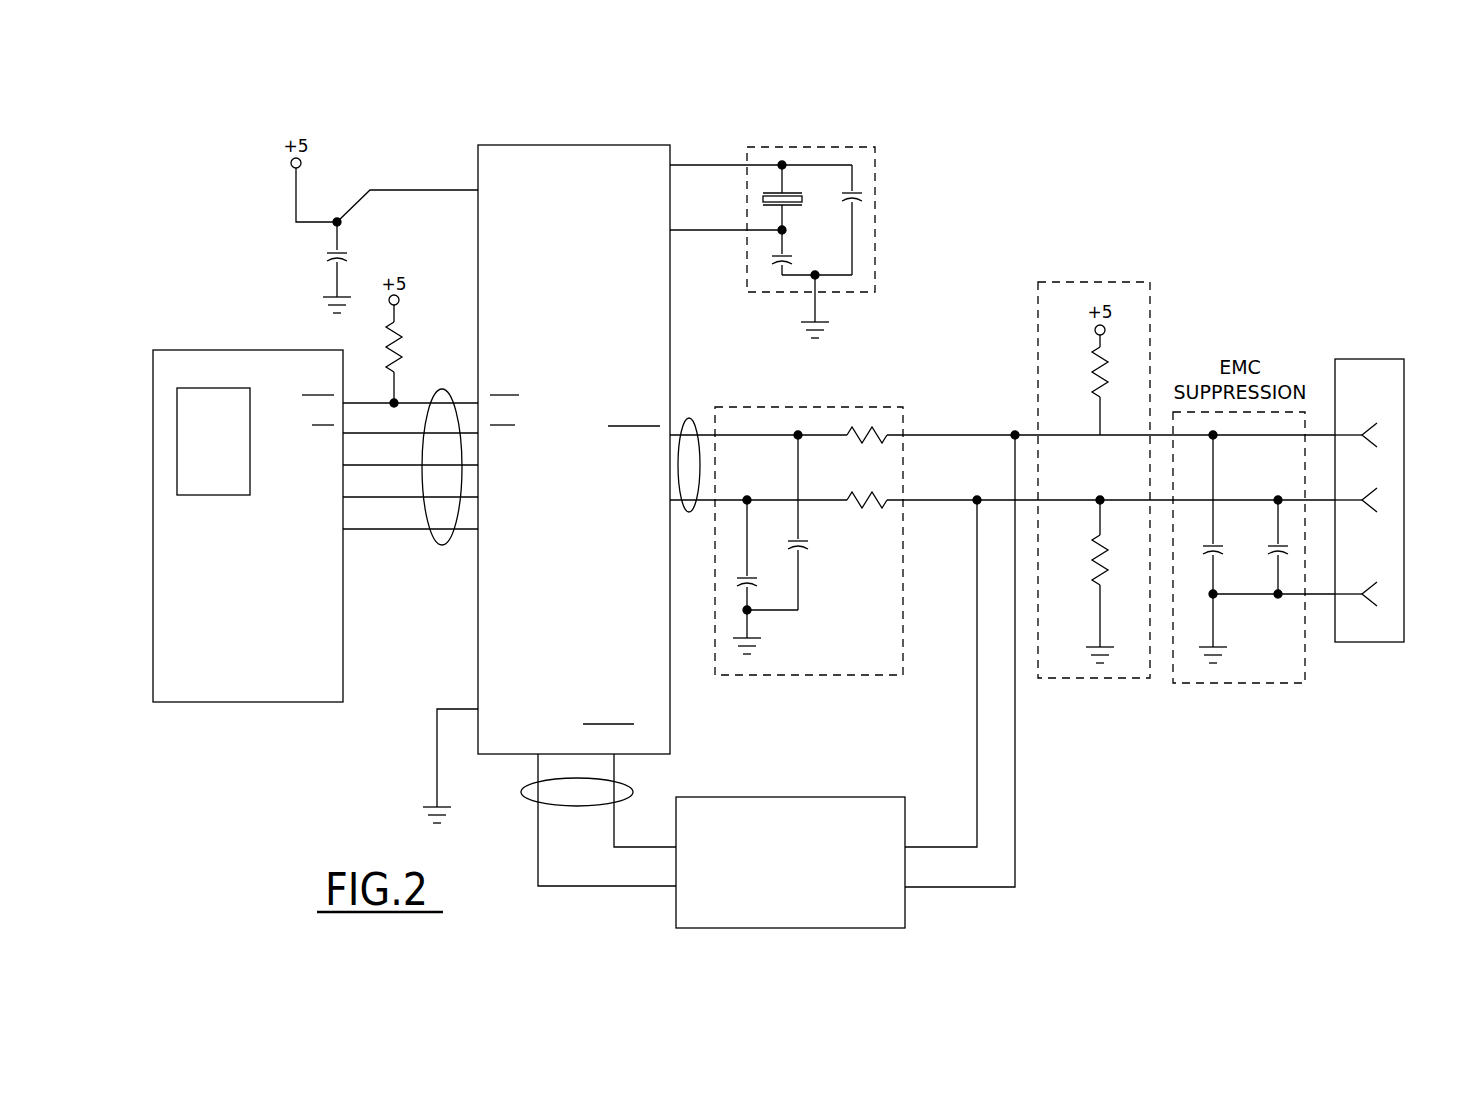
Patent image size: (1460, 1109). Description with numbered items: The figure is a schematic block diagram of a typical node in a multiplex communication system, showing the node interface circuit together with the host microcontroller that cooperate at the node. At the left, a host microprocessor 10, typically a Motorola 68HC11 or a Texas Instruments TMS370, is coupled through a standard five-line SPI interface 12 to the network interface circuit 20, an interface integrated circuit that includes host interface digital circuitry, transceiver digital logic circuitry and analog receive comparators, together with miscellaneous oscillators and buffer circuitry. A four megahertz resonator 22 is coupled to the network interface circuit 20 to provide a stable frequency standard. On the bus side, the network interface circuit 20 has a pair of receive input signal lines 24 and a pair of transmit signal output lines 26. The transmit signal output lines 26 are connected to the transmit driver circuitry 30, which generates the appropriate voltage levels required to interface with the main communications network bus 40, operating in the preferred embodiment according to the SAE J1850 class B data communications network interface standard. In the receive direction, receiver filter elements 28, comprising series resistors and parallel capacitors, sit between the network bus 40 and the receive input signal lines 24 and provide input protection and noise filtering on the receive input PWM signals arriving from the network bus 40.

The host microprocessor 10 is at (210, 357).
The SPI interface 12 is at (443, 390).
The network interface circuit 20 is at (478, 172).
The resonator 22 is at (878, 176).
The receive input signal lines 24 is at (689, 418).
The transmit signal output lines 26 is at (633, 788).
The receiver filter elements 28 is at (903, 407).
The transmit driver circuitry 30 is at (858, 797).
The main communications network bus 40 is at (1420, 414).